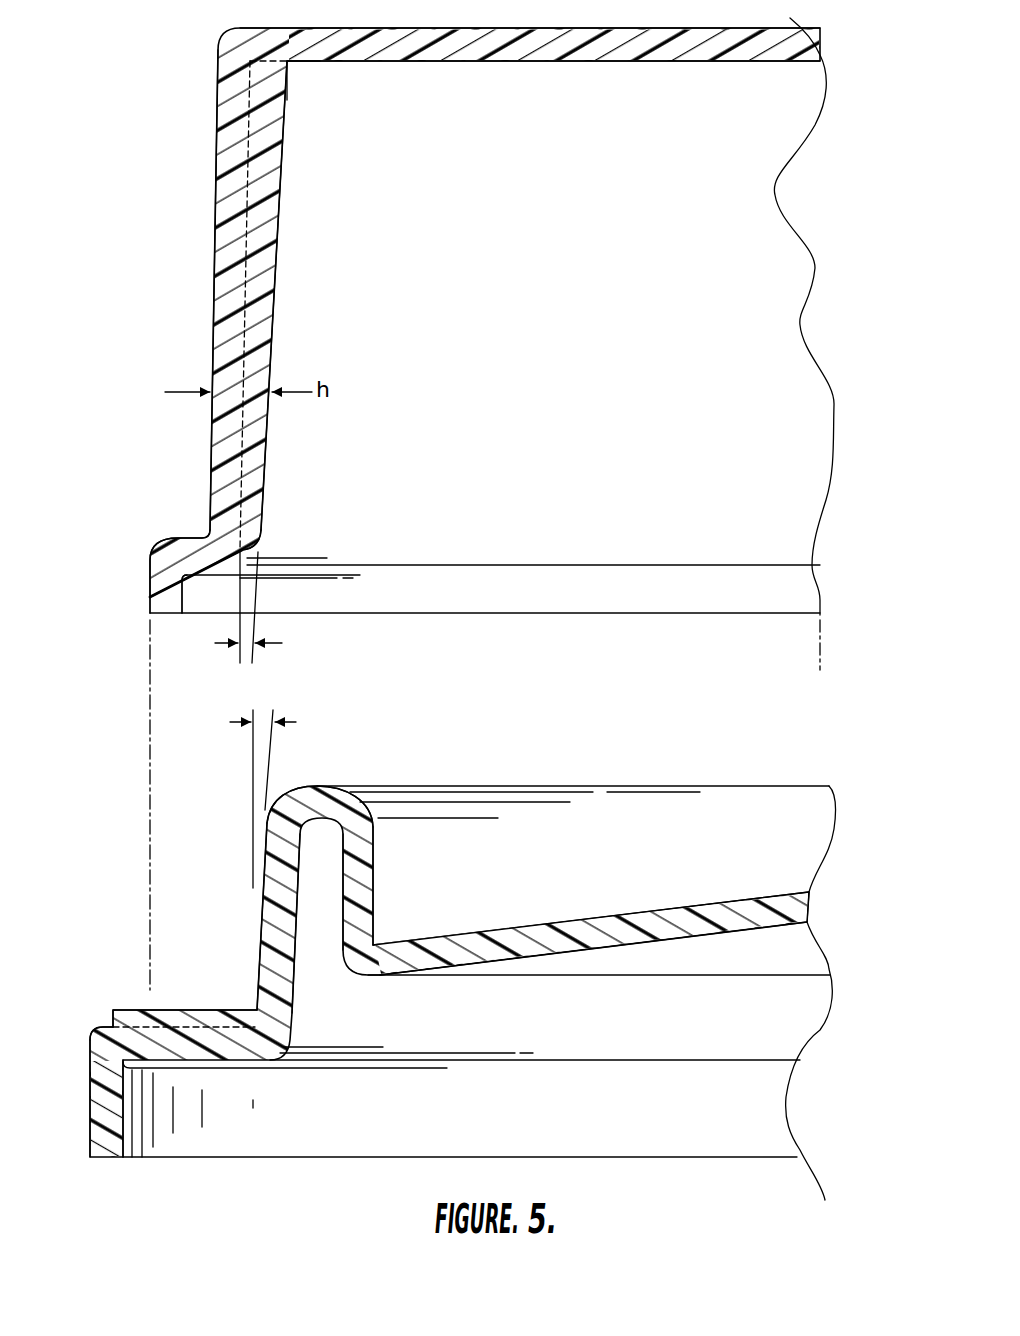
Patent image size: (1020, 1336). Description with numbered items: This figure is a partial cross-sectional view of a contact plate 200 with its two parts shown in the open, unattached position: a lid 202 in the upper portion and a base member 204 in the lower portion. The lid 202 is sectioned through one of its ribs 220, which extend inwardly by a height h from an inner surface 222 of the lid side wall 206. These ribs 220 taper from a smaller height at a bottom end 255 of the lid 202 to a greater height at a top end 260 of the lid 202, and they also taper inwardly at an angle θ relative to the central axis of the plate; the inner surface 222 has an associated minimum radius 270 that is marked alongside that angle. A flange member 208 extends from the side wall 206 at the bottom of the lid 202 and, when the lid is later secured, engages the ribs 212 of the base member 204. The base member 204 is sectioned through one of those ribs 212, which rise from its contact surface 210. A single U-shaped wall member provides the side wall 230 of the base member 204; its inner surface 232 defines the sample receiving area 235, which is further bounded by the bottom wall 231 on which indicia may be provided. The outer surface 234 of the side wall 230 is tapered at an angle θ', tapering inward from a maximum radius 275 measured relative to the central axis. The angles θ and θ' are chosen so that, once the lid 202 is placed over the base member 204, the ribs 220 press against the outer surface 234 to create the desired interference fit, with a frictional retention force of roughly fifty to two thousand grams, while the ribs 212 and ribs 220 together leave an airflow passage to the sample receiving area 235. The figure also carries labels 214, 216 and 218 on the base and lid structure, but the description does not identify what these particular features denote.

The contact plate 200 is at (168, 64).
The lid 202 is at (186, 322).
The base member 204 is at (119, 933).
The side wall 206 is at (214, 203).
The flange member 208 is at (150, 563).
The contact surface 210 is at (108, 1025).
The ribs 212 is at (112, 1011).
The rim wall 214 is at (90, 1085).
The top wall 216 is at (603, 28).
The base 218 is at (228, 1160).
The ribs 220 is at (270, 338).
The inner surface 222 is at (250, 545).
The side walls 230 is at (317, 786).
The bottom wall 231 is at (591, 908).
The inner surface 232 is at (375, 888).
The outer surface 234 is at (256, 955).
The sample receiving area 235 is at (732, 797).
The bottom end 255 is at (262, 532).
The top end 260 is at (288, 97).
The minimum radius 270 is at (236, 627).
The maximum radius 275 is at (252, 778).